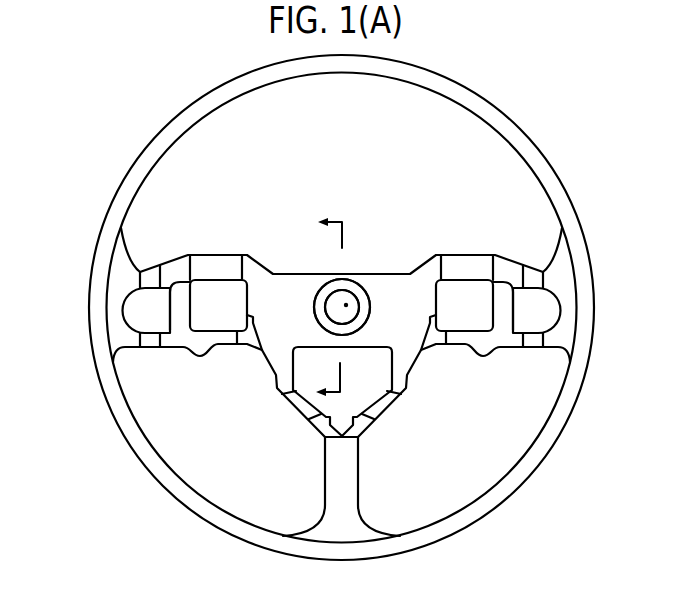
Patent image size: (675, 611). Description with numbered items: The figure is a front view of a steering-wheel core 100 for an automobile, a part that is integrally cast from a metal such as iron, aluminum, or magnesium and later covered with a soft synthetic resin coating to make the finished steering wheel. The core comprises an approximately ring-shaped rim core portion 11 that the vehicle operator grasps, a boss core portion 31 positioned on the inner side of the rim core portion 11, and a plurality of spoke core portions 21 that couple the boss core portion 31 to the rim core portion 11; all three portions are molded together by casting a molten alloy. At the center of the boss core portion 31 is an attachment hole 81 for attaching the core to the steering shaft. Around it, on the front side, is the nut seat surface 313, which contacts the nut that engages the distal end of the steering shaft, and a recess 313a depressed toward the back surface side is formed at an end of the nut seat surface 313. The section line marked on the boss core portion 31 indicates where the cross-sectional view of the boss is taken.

The steering-wheel core 100 is at (92, 105).
The rim core portion 11 is at (92, 273).
The spoke core portion 21 is at (225, 265).
The boss core portion 31 is at (280, 293).
The nut seat surface 313 is at (345, 289).
The recess 313a is at (320, 293).
The attachment hole 81 is at (347, 304).